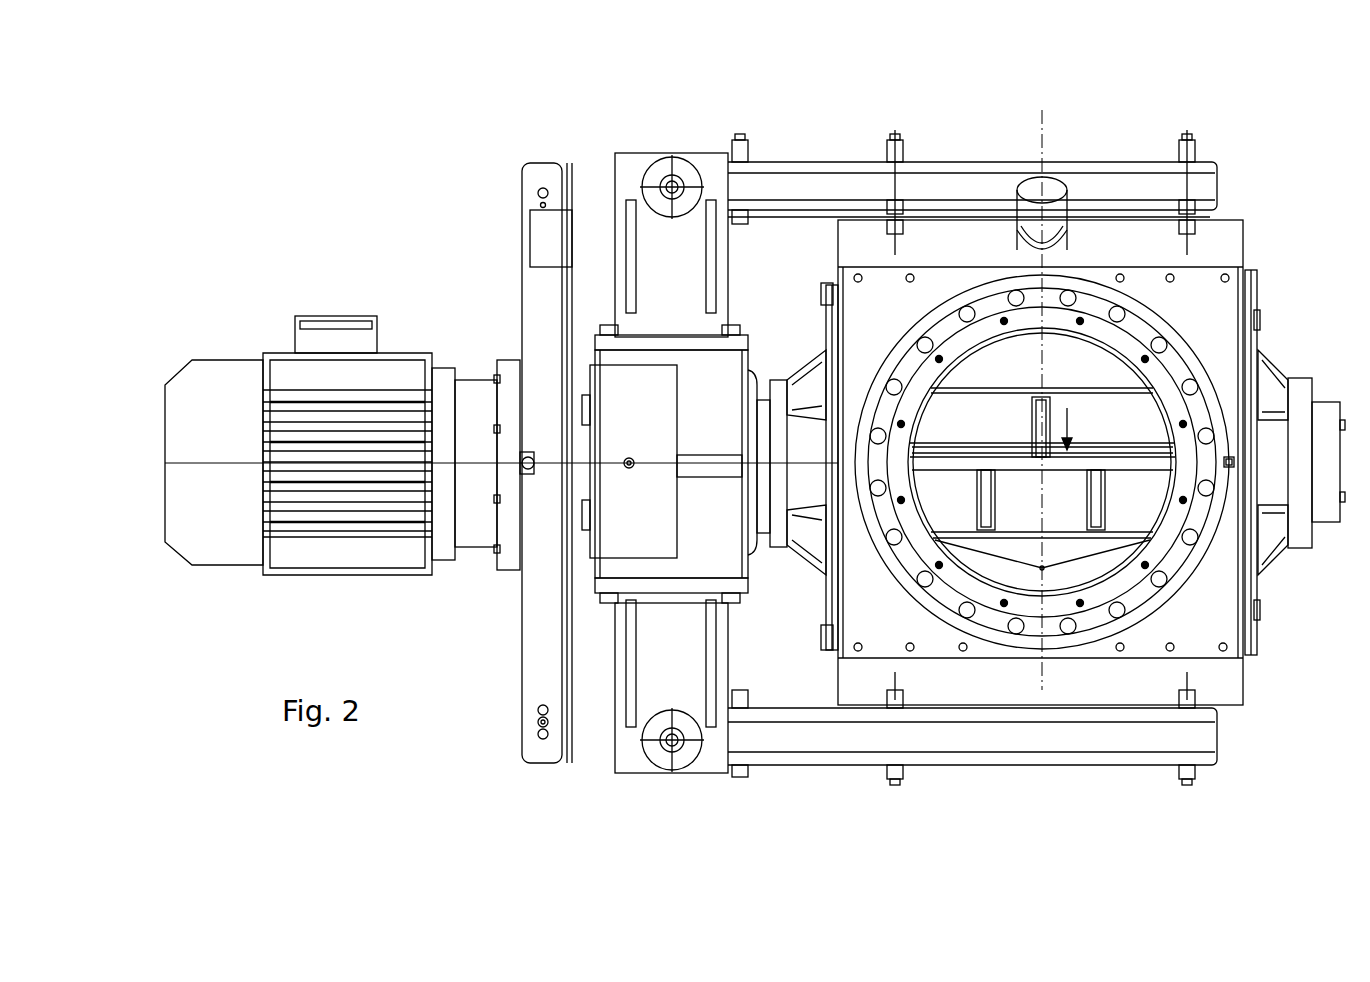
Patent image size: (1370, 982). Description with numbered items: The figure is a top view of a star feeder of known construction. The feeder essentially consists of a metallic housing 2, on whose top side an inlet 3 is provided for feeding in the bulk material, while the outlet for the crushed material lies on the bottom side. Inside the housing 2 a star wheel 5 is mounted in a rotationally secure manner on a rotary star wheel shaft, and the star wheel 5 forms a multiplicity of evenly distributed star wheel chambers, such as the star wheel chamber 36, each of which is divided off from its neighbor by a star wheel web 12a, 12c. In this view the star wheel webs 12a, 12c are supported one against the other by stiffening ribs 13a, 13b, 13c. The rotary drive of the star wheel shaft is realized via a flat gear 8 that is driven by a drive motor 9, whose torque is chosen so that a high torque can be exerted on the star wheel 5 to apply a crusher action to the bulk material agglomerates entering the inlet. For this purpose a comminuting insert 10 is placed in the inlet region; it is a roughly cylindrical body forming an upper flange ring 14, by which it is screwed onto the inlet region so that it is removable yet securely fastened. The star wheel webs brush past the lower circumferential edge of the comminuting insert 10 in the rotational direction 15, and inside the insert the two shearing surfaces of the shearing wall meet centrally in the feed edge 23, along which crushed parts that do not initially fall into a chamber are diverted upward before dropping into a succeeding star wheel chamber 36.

The housing 2 is at (1198, 310).
The inlet 3 is at (1090, 378).
The star wheel 5 is at (1069, 352).
The flat gear 8 is at (645, 400).
The drive motor 9 is at (360, 378).
The comminuting insert 10 is at (1072, 575).
The star wheel web 12a is at (982, 390).
The star wheel web 12c is at (1065, 538).
The stiffening rib 13a is at (1042, 395).
The stiffening rib 13b is at (1103, 530).
The stiffening rib 13c is at (985, 530).
The flange ring 14 is at (1152, 375).
The rotational direction 15 is at (1067, 408).
The feed edge 23 is at (1040, 590).
The star wheel chamber 36 is at (963, 420).